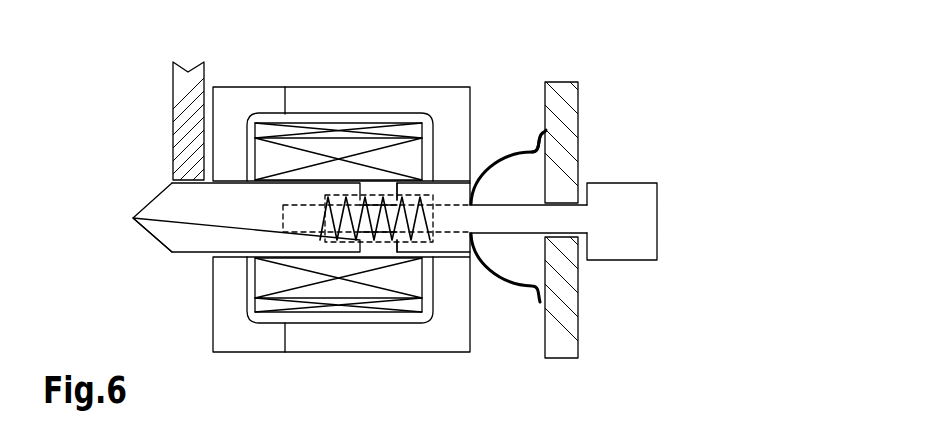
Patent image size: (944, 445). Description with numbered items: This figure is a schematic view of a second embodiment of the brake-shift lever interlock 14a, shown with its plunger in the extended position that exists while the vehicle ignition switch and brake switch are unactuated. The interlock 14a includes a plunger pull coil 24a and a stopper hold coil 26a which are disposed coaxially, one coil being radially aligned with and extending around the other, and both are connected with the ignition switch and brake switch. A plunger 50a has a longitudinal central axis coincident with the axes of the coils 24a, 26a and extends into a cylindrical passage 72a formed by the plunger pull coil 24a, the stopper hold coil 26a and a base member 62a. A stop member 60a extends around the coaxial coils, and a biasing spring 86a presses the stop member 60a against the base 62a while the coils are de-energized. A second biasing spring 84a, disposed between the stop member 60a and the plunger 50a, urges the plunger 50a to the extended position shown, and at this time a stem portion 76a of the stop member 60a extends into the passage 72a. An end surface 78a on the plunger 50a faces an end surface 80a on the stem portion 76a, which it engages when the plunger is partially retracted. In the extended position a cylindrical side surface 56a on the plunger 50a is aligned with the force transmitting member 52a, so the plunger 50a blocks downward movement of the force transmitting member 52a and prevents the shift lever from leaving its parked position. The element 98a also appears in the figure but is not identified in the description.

The brake-shift lever interlock 14a is at (600, 87).
The plunger pull coil 24a is at (307, 130).
The stopper hold coil 26a is at (358, 160).
The plunger 50a is at (172, 251).
The force transmitting member 52a is at (173, 107).
The cylindrical side surface 56a is at (197, 184).
The stop member 60a is at (444, 352).
The base member 62a is at (249, 336).
The cylindrical passage 72a is at (268, 262).
The stem portion 76a is at (403, 248).
The end surface 78a is at (372, 245).
The end surface 80a is at (508, 216).
The biasing spring 84a is at (383, 205).
The biasing spring 86a is at (540, 166).
The connector block 98a is at (627, 260).